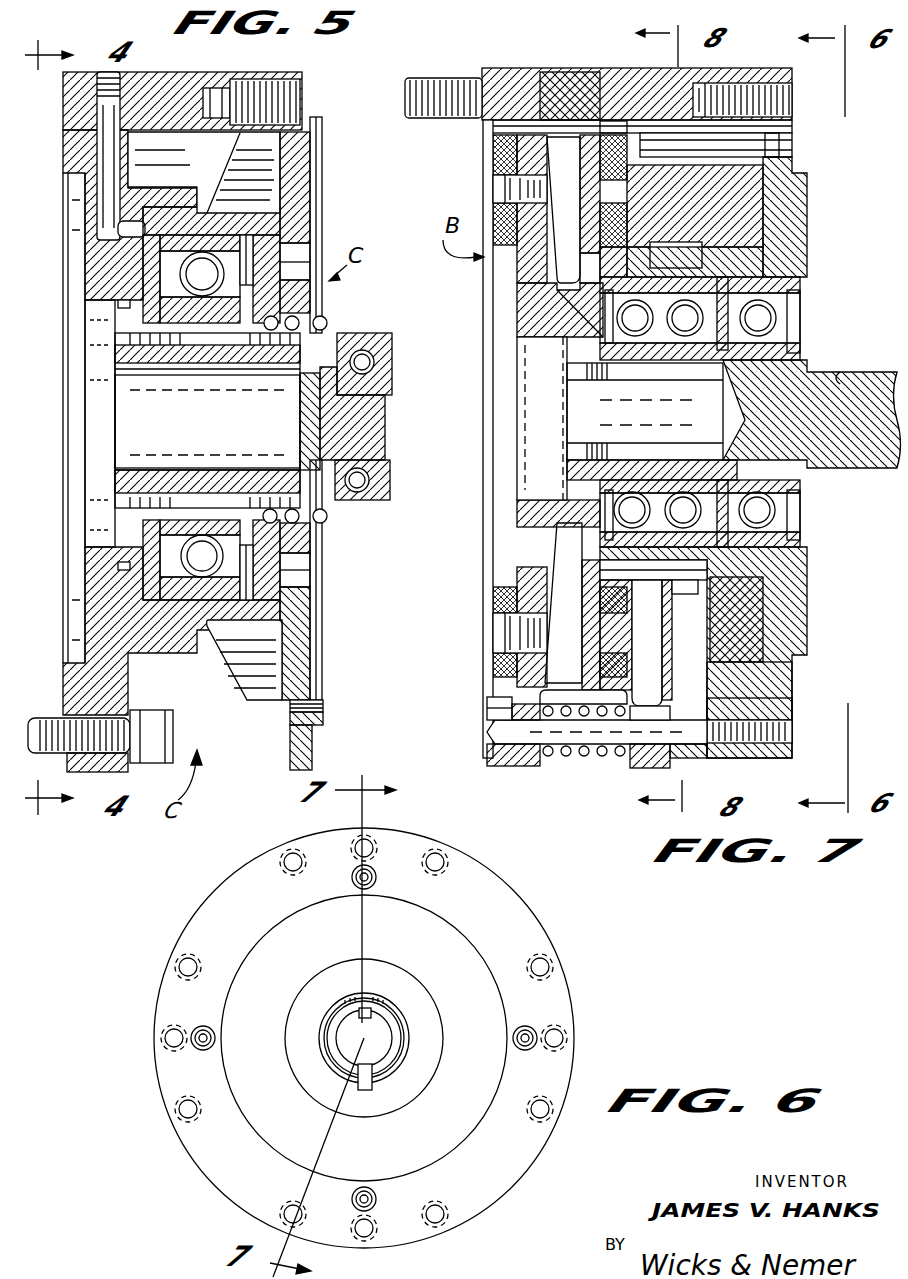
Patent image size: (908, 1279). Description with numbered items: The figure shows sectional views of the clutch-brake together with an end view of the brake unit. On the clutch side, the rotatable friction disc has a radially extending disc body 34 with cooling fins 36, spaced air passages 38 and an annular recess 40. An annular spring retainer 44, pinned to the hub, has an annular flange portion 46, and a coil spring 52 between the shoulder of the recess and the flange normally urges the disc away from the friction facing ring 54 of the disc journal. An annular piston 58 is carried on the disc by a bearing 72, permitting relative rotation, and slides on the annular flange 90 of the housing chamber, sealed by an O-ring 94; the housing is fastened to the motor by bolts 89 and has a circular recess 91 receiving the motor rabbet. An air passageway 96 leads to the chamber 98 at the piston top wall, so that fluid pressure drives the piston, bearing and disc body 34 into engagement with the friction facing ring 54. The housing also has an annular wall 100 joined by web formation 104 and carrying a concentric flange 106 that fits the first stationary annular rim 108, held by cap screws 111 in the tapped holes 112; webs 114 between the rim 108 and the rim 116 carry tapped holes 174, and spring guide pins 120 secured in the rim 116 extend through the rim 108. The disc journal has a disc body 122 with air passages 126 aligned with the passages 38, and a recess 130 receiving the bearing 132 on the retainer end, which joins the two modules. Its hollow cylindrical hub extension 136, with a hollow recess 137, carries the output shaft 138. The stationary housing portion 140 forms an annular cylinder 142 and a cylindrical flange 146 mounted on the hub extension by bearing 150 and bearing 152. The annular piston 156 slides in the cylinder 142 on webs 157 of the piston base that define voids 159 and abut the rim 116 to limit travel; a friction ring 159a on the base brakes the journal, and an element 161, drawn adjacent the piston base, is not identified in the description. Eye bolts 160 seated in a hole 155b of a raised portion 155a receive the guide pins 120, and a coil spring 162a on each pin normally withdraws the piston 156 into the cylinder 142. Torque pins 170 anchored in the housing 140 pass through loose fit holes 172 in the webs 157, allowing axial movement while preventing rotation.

In FIG. 5, the disc body 34 is at (297, 180).
In FIG. 5, the cooling fins 36 is at (242, 165).
In FIG. 5, the air passages 38 is at (303, 253).
In FIG. 5, the annular recess 40 is at (300, 550).
In FIG. 5, the annular spring retainer 44 is at (385, 403).
In FIG. 5, the annular flange portion 46 is at (300, 515).
In FIG. 5, the coil spring 52 is at (310, 307).
In FIG. 7, the friction facing ring 54 is at (503, 610).
In FIG. 5, the annular piston 58 is at (98, 311).
In FIG. 5, the bearing 72 is at (160, 323).
In FIG. 5, the bolts 89 is at (53, 730).
In FIG. 5, the annular flange 90 is at (105, 263).
In FIG. 5, the circular recess 91 is at (77, 650).
In FIG. 5, the O-ring 94 is at (123, 567).
In FIG. 5, the air passageway 96 is at (108, 133).
In FIG. 5, the chamber 98 is at (113, 227).
In FIG. 5, the annular wall 100 is at (293, 755).
In FIG. 5, the web formation 104 is at (197, 80).
In FIG. 5, the concentric flange 106 is at (318, 718).
In FIG. 7, the first stationary annular rim 108 is at (497, 80).
In FIG. 7, the cap screws 111 is at (597, 80).
In FIG. 5, the tapped holes 112 is at (290, 97).
In FIG. 7, the webs 114 is at (720, 85).
In FIG. 7, the rim 116 is at (717, 133).
In FIG. 7, the spring guide pins 120 is at (773, 748).
In FIG. 6, the spring guide pins 120 is at (447, 856).
In FIG. 7, the disc body 122 is at (530, 253).
In FIG. 7, the air passages 126 is at (530, 283).
In FIG. 7, the recess 130 is at (543, 340).
In FIG. 5, the bearing 132 is at (387, 370).
In FIG. 7, the hollow cylindrical hub extension 136 is at (677, 470).
In FIG. 7, the hollow recess 137 is at (677, 377).
In FIG. 7, the output shaft 138 is at (860, 393).
In FIG. 6, the output shaft 138 is at (380, 1031).
In FIG. 7, the stationary housing portion 140 is at (788, 627).
In FIG. 6, the stationary housing portion 140 is at (283, 1067).
In FIG. 7, the annular cylinder 142 is at (760, 193).
In FIG. 7, the cylindrical flange 146 is at (700, 273).
In FIG. 7, the bearing 150 is at (660, 497).
In FIG. 7, the bearing 152 is at (763, 508).
In FIG. 6, the bearing 152 is at (309, 1083).
In FIG. 7, the raised portion 155a is at (667, 667).
In FIG. 7, the hole 155b is at (658, 612).
In FIG. 7, the annular piston 156 is at (750, 600).
In FIG. 7, the webs 157 is at (653, 210).
In FIG. 7, the voids 159 is at (700, 682).
In FIG. 7, the friction ring 159a is at (613, 133).
In FIG. 7, the eye bolts 160 is at (645, 768).
In FIG. 7, the plate 161 is at (690, 572).
In FIG. 7, the coil spring 162a is at (560, 760).
In FIG. 7, the torque pins 170 is at (773, 137).
In FIG. 6, the torque pins 170 is at (359, 880).
In FIG. 7, the loose fit holes 172 is at (698, 160).
In FIG. 7, the tapped holes 174 is at (755, 83).